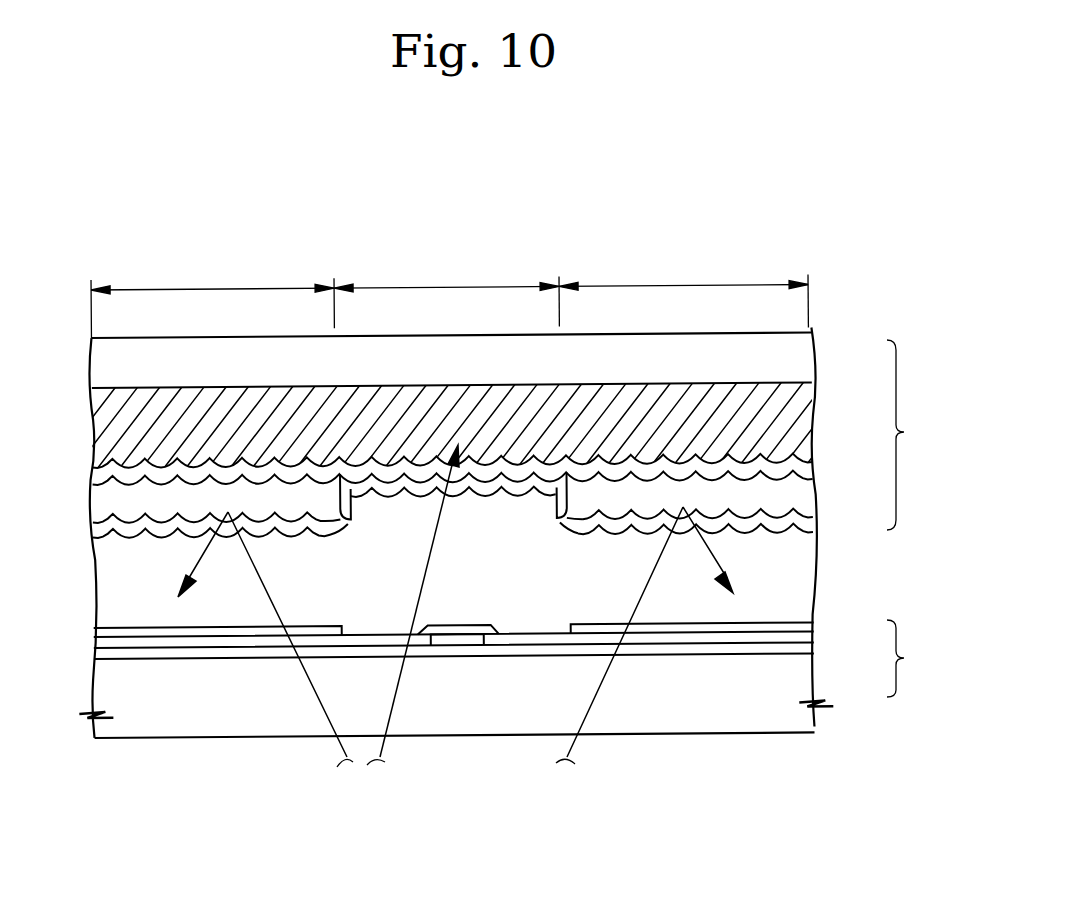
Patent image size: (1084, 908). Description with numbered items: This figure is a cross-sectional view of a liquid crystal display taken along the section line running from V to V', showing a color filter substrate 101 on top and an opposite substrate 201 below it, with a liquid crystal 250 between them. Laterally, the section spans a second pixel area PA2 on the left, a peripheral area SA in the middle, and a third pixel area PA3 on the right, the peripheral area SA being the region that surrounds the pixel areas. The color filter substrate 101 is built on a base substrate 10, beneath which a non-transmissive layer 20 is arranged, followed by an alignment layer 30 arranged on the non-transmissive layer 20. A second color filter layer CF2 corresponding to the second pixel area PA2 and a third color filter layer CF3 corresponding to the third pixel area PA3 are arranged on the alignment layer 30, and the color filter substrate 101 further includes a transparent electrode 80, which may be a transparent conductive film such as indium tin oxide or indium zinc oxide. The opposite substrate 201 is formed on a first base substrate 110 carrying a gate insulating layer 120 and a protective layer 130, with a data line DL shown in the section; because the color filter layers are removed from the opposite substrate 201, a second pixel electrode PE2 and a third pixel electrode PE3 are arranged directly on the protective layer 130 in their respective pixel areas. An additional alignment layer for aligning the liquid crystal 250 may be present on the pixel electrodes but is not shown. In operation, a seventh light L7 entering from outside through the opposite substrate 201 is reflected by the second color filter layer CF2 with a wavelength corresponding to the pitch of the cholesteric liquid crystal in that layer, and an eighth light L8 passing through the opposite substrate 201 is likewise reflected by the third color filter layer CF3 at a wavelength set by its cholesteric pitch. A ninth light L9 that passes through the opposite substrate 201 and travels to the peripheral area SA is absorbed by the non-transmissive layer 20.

The base substrate 10 is at (800, 350).
The non-transmissive layer 20 is at (800, 410).
The alignment layer 30 is at (800, 466).
The second color filter layer CF2 is at (325, 513).
The third color filter layer CF3 is at (800, 494).
The transparent electrode 80 is at (800, 525).
The color filter substrate 101 is at (916, 435).
The liquid crystal 250 is at (800, 574).
The second pixel electrode PE2 is at (129, 634).
The third pixel electrode PE3 is at (748, 627).
The data line DL is at (460, 643).
The protective layer 130 is at (806, 638).
The gate insulating layer 120 is at (806, 648).
The first base substrate 110 is at (800, 690).
The opposite substrate 201 is at (915, 658).
The second pixel area PA2 is at (213, 301).
The peripheral area SA is at (446, 294).
The third pixel area PA3 is at (684, 295).
The seventh light L7 is at (265, 600).
The eighth light L8 is at (636, 596).
The ninth light L9 is at (430, 553).
The section line endpoint V is at (99, 758).
The section line endpoint V' is at (820, 751).